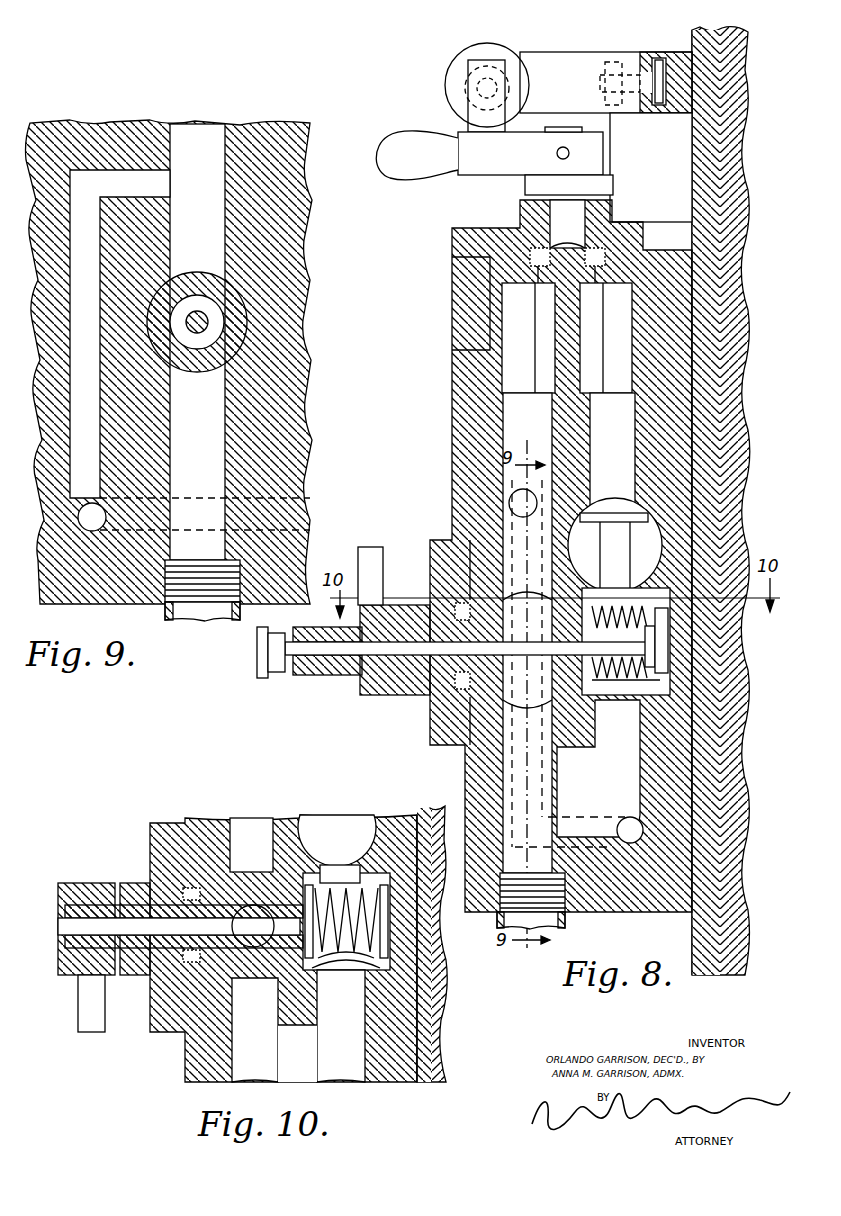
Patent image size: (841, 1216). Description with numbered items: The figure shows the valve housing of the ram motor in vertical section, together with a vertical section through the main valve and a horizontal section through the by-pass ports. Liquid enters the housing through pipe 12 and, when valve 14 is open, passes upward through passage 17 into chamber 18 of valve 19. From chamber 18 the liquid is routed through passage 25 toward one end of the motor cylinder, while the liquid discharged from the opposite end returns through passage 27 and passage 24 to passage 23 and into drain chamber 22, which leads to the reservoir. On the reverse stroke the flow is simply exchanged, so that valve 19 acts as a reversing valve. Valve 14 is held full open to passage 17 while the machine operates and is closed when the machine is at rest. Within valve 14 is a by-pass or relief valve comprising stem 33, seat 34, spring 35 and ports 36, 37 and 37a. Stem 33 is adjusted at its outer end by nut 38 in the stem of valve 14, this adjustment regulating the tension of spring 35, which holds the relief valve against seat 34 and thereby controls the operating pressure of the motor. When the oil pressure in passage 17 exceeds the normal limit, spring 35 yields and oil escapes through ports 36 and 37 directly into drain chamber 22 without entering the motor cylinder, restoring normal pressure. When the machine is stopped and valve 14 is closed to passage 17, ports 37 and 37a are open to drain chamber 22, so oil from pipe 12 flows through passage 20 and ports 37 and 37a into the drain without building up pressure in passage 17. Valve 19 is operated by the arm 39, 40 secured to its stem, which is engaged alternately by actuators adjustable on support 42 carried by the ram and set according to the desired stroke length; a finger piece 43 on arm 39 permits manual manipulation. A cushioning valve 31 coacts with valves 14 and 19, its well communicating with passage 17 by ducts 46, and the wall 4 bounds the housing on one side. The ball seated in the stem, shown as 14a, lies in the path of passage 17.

In FIG. 8, the support wall 4 is at (742, 40).
In FIG. 9, the pipe 12 is at (226, 614).
In FIG. 8, the pipe 12 is at (560, 918).
In FIG. 9, the valve 14 is at (189, 378).
In FIG. 8, the valve 14 is at (446, 700).
In FIG. 10, the valve 14 is at (258, 866).
In FIG. 9, the valve passage 14a is at (197, 326).
In FIG. 8, the valve passage 14a is at (527, 600).
In FIG. 10, the valve passage 14a is at (247, 945).
In FIG. 9, the passage 17 is at (197, 342).
In FIG. 8, the passage 17 is at (527, 633).
In FIG. 10, the passage 17 is at (255, 1030).
In FIG. 8, the chamber 18 is at (528, 338).
In FIG. 8, the valve 19 is at (490, 350).
In FIG. 8, the passage 20 is at (598, 768).
In FIG. 10, the passage 20 is at (321, 1026).
In FIG. 8, the drain chamber 22 is at (615, 545).
In FIG. 10, the drain chamber 22 is at (337, 840).
In FIG. 8, the passage 23 is at (612, 469).
In FIG. 8, the passage 24 is at (606, 338).
In FIG. 8, the passage 25 is at (536, 283).
In FIG. 8, the passage 27 is at (598, 283).
In FIG. 8, the cushioning valve 31 is at (640, 522).
In FIG. 8, the stem 33 is at (467, 651).
In FIG. 10, the stem 33 is at (180, 925).
In FIG. 8, the seat 34 is at (588, 624).
In FIG. 8, the spring 35 is at (640, 680).
In FIG. 10, the spring 35 is at (345, 964).
In FIG. 8, the port 36 is at (562, 628).
In FIG. 8, the port 37 is at (628, 594).
In FIG. 10, the port 37 is at (346, 917).
In FIG. 10, the port 37a is at (352, 966).
In FIG. 8, the nut 38 is at (290, 676).
In FIG. 8, the arm 39 is at (515, 170).
In FIG. 8, the arm 40 is at (474, 68).
In FIG. 8, the support 42 is at (660, 52).
In FIG. 8, the finger piece 43 is at (440, 168).
In FIG. 9, the duct 46 is at (190, 365).
In FIG. 8, the duct 46 is at (576, 666).